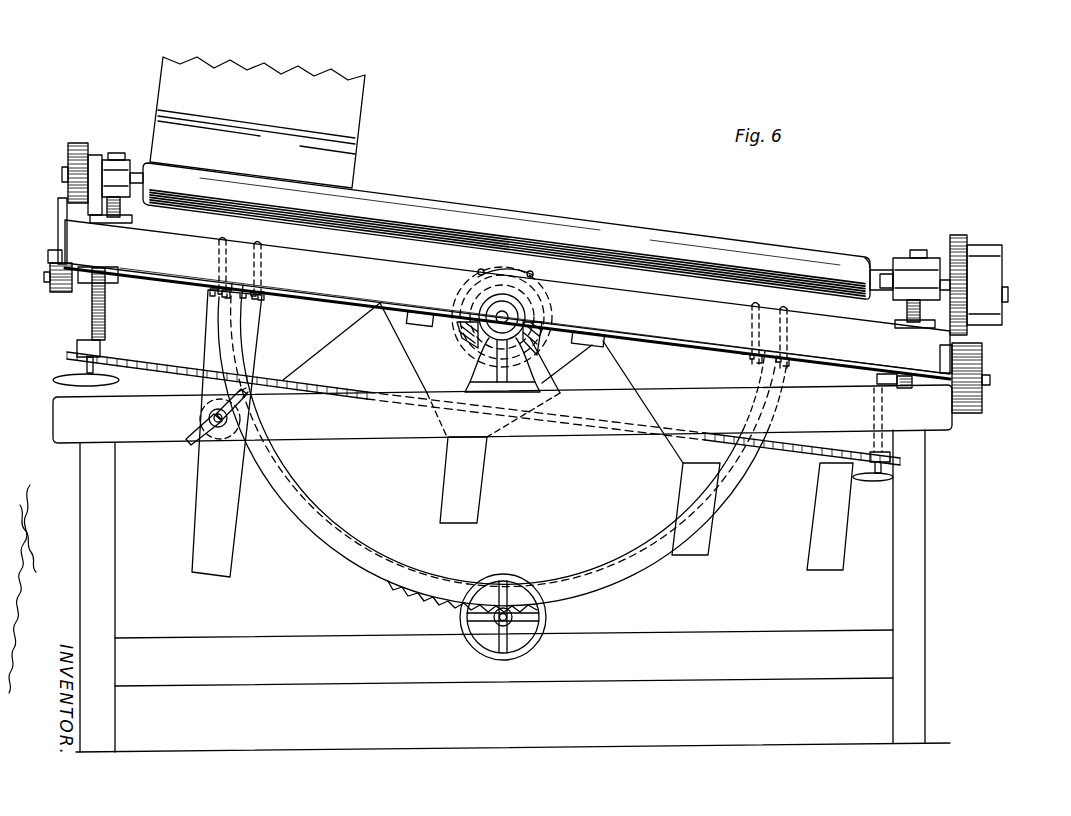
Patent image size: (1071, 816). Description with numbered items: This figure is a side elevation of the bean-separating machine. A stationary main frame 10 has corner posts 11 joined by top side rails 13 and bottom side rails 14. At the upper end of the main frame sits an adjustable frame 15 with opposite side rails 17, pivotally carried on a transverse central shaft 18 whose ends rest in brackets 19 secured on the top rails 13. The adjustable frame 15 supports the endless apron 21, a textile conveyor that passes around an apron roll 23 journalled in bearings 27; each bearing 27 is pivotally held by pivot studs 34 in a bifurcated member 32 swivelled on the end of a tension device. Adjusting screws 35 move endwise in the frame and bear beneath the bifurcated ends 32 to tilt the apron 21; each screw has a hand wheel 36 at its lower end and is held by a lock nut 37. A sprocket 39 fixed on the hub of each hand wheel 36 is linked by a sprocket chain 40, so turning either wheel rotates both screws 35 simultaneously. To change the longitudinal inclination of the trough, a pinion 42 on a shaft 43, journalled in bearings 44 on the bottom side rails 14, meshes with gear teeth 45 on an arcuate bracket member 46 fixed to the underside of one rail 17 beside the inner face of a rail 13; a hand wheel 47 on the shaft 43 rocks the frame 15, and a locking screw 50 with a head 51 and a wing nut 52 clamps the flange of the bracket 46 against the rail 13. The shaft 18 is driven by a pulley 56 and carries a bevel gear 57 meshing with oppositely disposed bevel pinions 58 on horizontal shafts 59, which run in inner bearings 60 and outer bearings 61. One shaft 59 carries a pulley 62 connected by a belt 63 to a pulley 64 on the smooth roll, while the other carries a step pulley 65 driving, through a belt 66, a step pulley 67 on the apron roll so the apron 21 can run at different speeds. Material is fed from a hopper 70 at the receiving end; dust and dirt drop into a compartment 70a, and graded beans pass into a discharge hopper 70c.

The stationary main frame 10 is at (501, 623).
The corner posts 11 is at (100, 572).
The top side rails 13 is at (502, 414).
The bottom side rails 14 is at (504, 658).
The adjustable frame 15 is at (690, 300).
The side rails 17 is at (507, 299).
The transverse central shaft 18 is at (506, 315).
The brackets 19 is at (470, 369).
The endless apron 21 is at (258, 178).
The apron roll 23 is at (876, 262).
The bearings 27 is at (133, 165).
The bifurcated member 32 is at (116, 158).
The pivot studs 34 is at (905, 290).
The adjusting screws 35 is at (108, 300).
The hand wheel 36 is at (56, 378).
The lock nut 37 is at (112, 224).
The sprocket 39 is at (92, 345).
The sprocket chain 40 is at (137, 358).
The pinion 42 is at (518, 630).
The shaft 43 is at (512, 615).
The bearings 44 is at (516, 625).
The gear teeth 45 is at (428, 596).
The arcuate bracket member 46 is at (302, 520).
The hand wheel 47 is at (490, 650).
The locking screw 50 is at (202, 436).
The head 51 is at (198, 423).
The wing nut 52 is at (205, 414).
The pulley 56 is at (542, 346).
The bevel gear 57 is at (456, 340).
The bevel pinions 58 is at (462, 290).
The horizontal shafts 59 is at (50, 256).
The inner bearings 60 is at (405, 322).
The outer bearings 61 is at (125, 283).
The pulley 62 is at (50, 278).
The belt 63 is at (60, 212).
The pulley 64 is at (70, 146).
The pulley 65 is at (984, 364).
The belt 66 is at (965, 240).
The pulley 67 is at (1003, 272).
The hopper 70 is at (257, 122).
The compartment 70a is at (522, 433).
The discharge hopper 70c is at (683, 463).